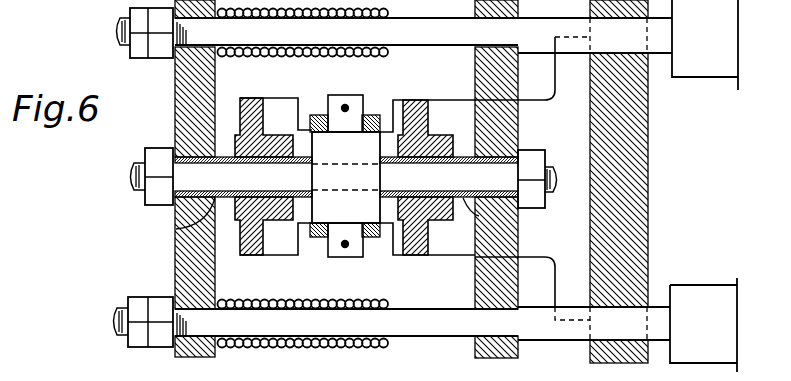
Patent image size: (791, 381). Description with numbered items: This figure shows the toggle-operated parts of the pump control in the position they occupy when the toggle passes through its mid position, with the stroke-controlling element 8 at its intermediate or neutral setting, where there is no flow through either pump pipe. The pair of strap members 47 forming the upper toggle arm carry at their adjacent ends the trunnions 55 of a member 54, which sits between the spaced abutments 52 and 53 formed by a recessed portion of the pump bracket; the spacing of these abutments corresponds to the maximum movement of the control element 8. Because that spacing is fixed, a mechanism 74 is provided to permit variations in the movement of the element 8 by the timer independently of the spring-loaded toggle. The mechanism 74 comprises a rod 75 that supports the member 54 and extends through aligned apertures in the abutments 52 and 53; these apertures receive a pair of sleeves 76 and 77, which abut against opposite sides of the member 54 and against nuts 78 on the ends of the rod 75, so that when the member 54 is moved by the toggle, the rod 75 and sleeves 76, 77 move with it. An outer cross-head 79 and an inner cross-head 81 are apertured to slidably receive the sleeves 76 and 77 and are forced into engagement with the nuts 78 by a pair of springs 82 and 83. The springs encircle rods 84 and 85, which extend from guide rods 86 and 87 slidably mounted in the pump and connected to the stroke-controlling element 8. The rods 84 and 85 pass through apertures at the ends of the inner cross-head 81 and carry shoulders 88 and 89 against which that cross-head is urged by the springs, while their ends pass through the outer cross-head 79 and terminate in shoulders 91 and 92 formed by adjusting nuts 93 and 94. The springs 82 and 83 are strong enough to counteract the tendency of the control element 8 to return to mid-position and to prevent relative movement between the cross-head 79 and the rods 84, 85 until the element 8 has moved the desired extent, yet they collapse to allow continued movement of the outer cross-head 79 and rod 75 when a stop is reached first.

The stroke-controlling element 8 is at (707, 62).
The strap members 47 is at (311, 118).
The abutment 52 is at (293, 207).
The abutment 53 is at (397, 216).
The member 54 is at (346, 177).
The trunnions 55 is at (363, 100).
The mechanism 74 is at (310, 94).
The rod 75 is at (346, 148).
The sleeve 76 is at (176, 228).
The sleeve 77 is at (479, 216).
The nuts 78 is at (146, 150).
The outer cross-head 79 is at (174, 110).
The inner cross-head 81 is at (510, 76).
The spring 82 is at (356, 50).
The spring 83 is at (366, 343).
The rod 84 is at (420, 35).
The rod 85 is at (397, 320).
The guide rod 86 is at (599, 35).
The guide rod 87 is at (598, 323).
The shoulder 88 is at (517, 33).
The shoulder 89 is at (517, 322).
The shoulder 91 is at (176, 58).
The shoulder 92 is at (174, 290).
The adjusting nut 93 is at (142, 48).
The adjusting nut 94 is at (160, 337).